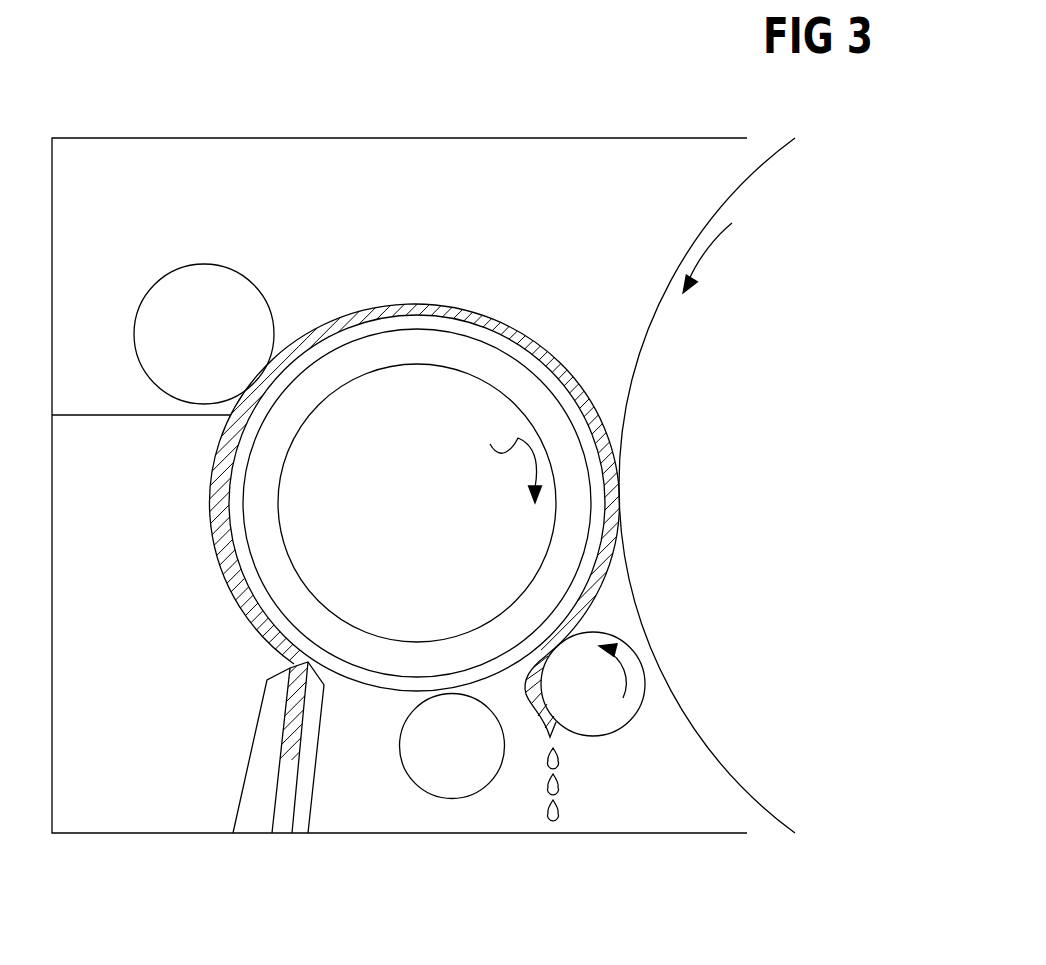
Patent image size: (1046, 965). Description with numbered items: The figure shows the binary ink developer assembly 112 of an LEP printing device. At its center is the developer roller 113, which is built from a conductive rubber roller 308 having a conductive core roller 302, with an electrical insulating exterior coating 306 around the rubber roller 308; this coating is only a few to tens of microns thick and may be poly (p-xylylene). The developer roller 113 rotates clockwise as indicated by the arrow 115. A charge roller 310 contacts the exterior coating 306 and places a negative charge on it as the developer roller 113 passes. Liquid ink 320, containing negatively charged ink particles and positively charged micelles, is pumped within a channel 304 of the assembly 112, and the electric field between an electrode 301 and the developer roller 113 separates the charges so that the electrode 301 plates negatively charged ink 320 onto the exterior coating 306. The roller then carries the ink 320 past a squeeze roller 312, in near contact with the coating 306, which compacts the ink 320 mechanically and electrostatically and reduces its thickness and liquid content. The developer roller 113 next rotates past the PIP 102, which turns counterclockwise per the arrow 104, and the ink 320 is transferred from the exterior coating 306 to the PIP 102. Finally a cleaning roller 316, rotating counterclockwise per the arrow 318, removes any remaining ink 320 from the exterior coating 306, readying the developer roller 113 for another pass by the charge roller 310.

The PIP 102 is at (680, 500).
The arrow 104 is at (711, 250).
The BID assembly 112 is at (71, 194).
The developer roller 113 is at (380, 730).
The arrow 115 is at (496, 463).
The electrode 301 is at (136, 631).
The conductive core roller 302 is at (398, 516).
The channel 304 is at (276, 845).
The electrical insulating exterior coating 306 is at (358, 673).
The conductive rubber roller 308 is at (346, 636).
The charge roller 310 is at (433, 759).
The squeeze roller 312 is at (185, 347).
The cleaning roller 316 is at (573, 696).
The arrow 318 is at (623, 698).
The liquid ink 320 is at (407, 304).